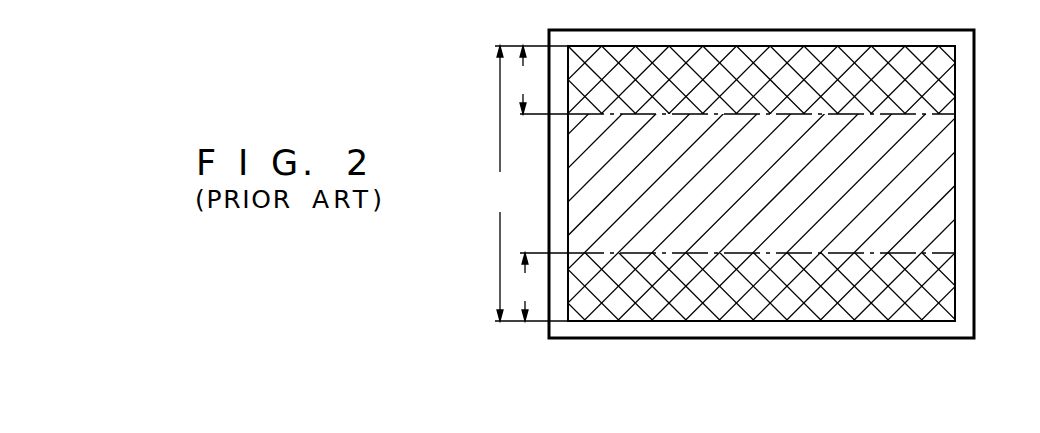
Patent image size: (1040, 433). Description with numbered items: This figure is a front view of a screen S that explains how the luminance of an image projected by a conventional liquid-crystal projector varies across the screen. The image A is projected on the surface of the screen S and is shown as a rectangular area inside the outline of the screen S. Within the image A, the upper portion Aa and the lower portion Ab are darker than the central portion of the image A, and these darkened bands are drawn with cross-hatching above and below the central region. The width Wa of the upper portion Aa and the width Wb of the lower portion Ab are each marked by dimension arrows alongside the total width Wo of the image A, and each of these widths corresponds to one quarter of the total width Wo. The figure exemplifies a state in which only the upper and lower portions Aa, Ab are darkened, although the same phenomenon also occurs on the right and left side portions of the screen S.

The screen S is at (976, 187).
The image A is at (962, 160).
The upper portion of image Aa is at (948, 80).
The lower portion of image Ab is at (951, 304).
The total width of image Wo is at (497, 183).
The width of upper portion Wa is at (531, 80).
The width of lower portion Wb is at (531, 287).